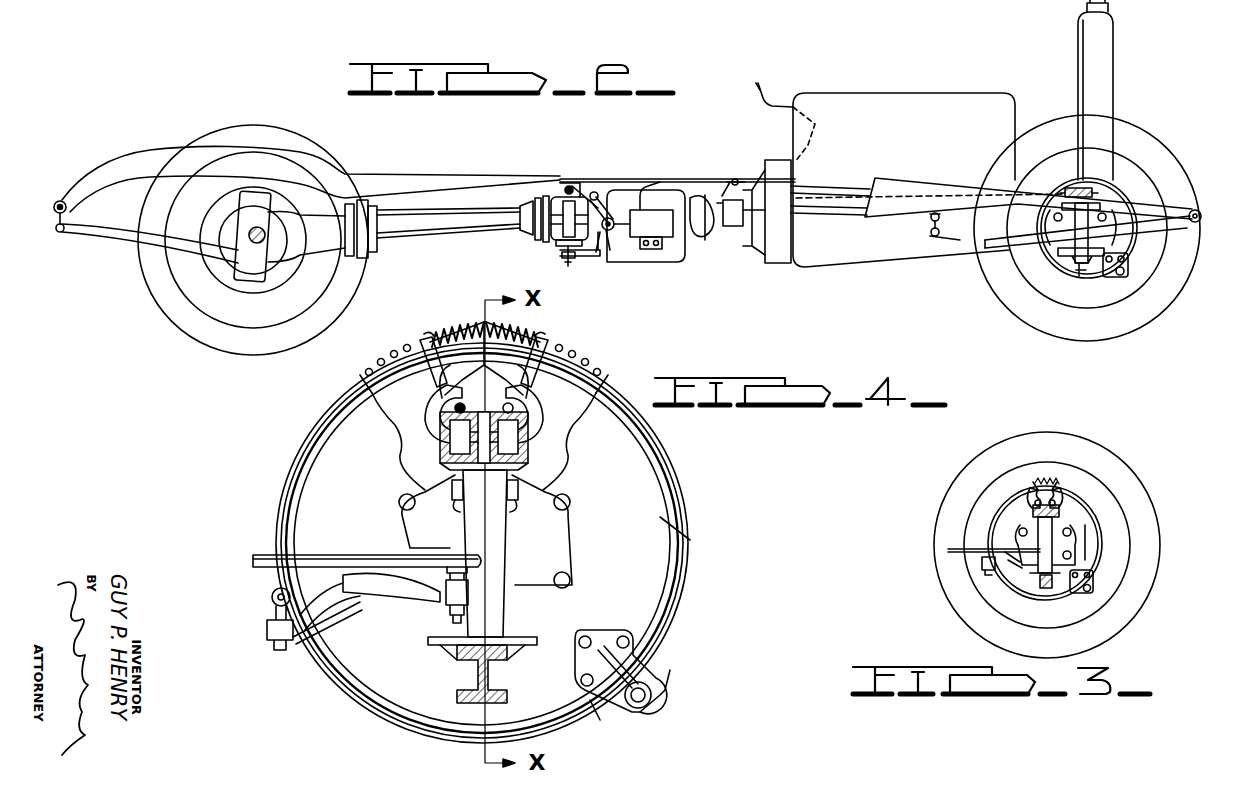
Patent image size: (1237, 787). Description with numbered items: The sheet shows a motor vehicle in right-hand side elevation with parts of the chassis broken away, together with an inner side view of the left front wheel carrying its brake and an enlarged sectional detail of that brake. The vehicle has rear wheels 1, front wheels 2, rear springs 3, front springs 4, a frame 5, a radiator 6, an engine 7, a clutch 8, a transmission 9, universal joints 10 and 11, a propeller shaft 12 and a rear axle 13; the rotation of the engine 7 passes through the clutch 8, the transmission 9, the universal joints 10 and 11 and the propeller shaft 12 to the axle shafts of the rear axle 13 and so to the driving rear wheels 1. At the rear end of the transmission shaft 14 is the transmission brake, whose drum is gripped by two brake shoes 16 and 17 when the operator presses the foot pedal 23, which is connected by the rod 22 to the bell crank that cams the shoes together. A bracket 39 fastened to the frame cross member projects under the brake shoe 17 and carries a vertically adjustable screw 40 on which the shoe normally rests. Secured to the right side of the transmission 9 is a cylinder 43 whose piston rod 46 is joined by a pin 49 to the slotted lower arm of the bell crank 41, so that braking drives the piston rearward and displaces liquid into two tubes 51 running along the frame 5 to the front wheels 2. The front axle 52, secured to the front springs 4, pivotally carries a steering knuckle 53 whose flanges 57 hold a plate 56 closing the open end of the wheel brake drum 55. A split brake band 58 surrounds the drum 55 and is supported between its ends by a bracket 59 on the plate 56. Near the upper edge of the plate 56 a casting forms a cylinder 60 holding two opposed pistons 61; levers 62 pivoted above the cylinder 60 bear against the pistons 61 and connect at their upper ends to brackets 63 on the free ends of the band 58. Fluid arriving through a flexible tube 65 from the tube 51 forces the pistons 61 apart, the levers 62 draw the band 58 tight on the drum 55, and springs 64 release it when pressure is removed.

In FIG. 2, the rear wheels 1 is at (156, 292).
In FIG. 2, the front wheels 2 is at (1188, 274).
In FIG. 2, the rear springs 3 is at (96, 243).
In FIG. 2, the front springs 4 is at (1192, 233).
In FIG. 2, the frame 5 is at (420, 180).
In FIG. 2, the radiator 6 is at (1110, 38).
In FIG. 2, the engine 7 is at (946, 92).
In FIG. 2, the clutch 8 is at (778, 264).
In FIG. 2, the transmission 9 is at (686, 256).
In FIG. 2, the universal joint 10 is at (527, 231).
In FIG. 2, the universal joint 11 is at (370, 246).
In FIG. 2, the propeller shaft 12 is at (402, 236).
In FIG. 2, the rear axle 13 is at (282, 236).
In FIG. 2, the transmission shaft 14 is at (534, 206).
In FIG. 2, the brake shoe 16 is at (556, 199).
In FIG. 2, the brake shoe 17 is at (558, 242).
In FIG. 2, the rod 22 is at (694, 179).
In FIG. 2, the manually operated lever 23 is at (762, 104).
In FIG. 2, the bracket 39 is at (590, 258).
In FIG. 2, the vertically adjustable screw 40 is at (568, 266).
In FIG. 2, the bell crank 41 is at (574, 186).
In FIG. 2, the cylinder 43 is at (651, 249).
In FIG. 2, the piston rod 46 is at (614, 215).
In FIG. 2, the pin 49 is at (609, 252).
In FIG. 2, the pipes or tubes 51 is at (828, 186).
In FIG. 2, the front axle 52 is at (1080, 272).
In FIG. 4, the front axle 52 is at (470, 675).
In FIG. 3, the front axle 52 is at (1040, 590).
In FIG. 4, the steering knuckle 53 is at (510, 506).
In FIG. 2, the brake drum 55 is at (1130, 222).
In FIG. 4, the brake drum 55 is at (668, 500).
In FIG. 3, the brake drum 55 is at (1094, 552).
In FIG. 2, the plate 56 is at (1118, 206).
In FIG. 4, the plate 56 is at (672, 531).
In FIG. 3, the plate 56 is at (1088, 535).
In FIG. 2, the flanges 57 is at (946, 224).
In FIG. 4, the flanges 57 is at (400, 518).
In FIG. 3, the flanges 57 is at (1018, 538).
In FIG. 2, the brake band 58 is at (1038, 272).
In FIG. 4, the brake band 58 is at (672, 472).
In FIG. 3, the brake band 58 is at (998, 512).
In FIG. 2, the bracket 59 is at (1120, 280).
In FIG. 4, the bracket 59 is at (655, 673).
In FIG. 3, the bracket 59 is at (1094, 585).
In FIG. 4, the cylinder 60 is at (530, 465).
In FIG. 3, the cylinder 60 is at (1062, 518).
In FIG. 4, the pistons 61 is at (443, 438).
In FIG. 4, the arms or levers 62 is at (437, 403).
In FIG. 3, the arms or levers 62 is at (1030, 490).
In FIG. 4, the brackets 63 is at (418, 349).
In FIG. 4, the springs 64 is at (455, 330).
In FIG. 2, the flexible tube 65 is at (1094, 193).